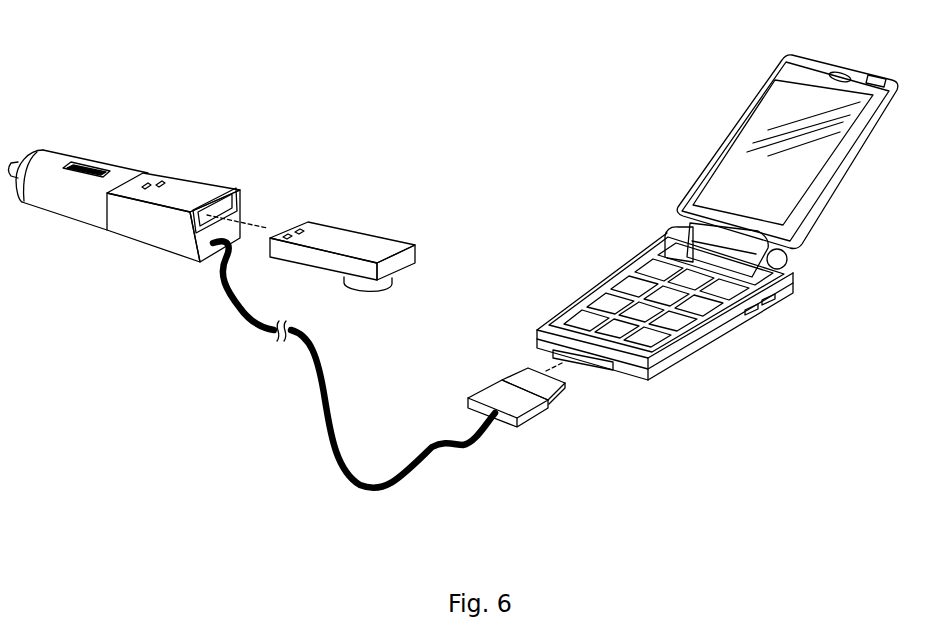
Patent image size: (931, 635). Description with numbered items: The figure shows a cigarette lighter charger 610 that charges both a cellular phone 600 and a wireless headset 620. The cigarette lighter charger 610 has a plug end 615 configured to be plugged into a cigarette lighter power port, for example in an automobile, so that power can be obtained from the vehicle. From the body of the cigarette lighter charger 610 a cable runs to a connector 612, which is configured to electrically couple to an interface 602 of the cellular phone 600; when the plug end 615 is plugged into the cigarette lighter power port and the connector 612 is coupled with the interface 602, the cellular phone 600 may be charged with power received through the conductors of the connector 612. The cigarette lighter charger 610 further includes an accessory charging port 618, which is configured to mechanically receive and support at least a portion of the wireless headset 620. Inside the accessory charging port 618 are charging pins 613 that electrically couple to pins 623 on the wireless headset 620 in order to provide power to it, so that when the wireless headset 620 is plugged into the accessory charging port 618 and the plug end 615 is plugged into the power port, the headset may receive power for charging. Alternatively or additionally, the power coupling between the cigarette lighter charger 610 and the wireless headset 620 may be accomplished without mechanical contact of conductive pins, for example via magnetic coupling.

The cellular phone 600 is at (717, 241).
The interface 602 is at (587, 363).
The cigarette lighter charger 610 is at (252, 299).
The connector 612 is at (498, 393).
The charging pins 613 is at (161, 182).
The plug end 615 is at (26, 152).
The accessory charging port 618 is at (228, 203).
The wireless headset 620 is at (346, 231).
The pins 623 is at (290, 233).